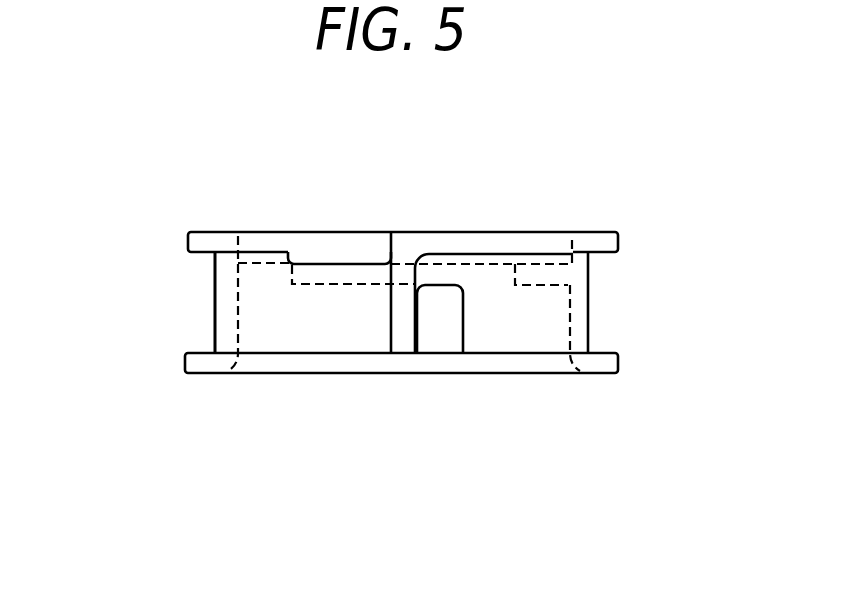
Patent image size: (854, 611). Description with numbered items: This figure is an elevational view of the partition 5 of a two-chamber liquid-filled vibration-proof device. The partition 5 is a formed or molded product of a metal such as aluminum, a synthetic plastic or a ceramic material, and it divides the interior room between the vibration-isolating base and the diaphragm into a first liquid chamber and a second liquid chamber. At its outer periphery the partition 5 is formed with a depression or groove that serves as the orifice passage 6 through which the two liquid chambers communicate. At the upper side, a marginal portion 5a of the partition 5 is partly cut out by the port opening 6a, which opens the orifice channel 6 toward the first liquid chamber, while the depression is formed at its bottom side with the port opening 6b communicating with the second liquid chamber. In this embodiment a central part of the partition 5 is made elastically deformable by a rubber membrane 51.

The partition 5 is at (400, 299).
The marginal portion 5a is at (598, 243).
The orifice passage 6 is at (205, 292).
The port opening 6a is at (338, 247).
The port opening 6b is at (440, 328).
The rubber membrane 51 is at (346, 280).